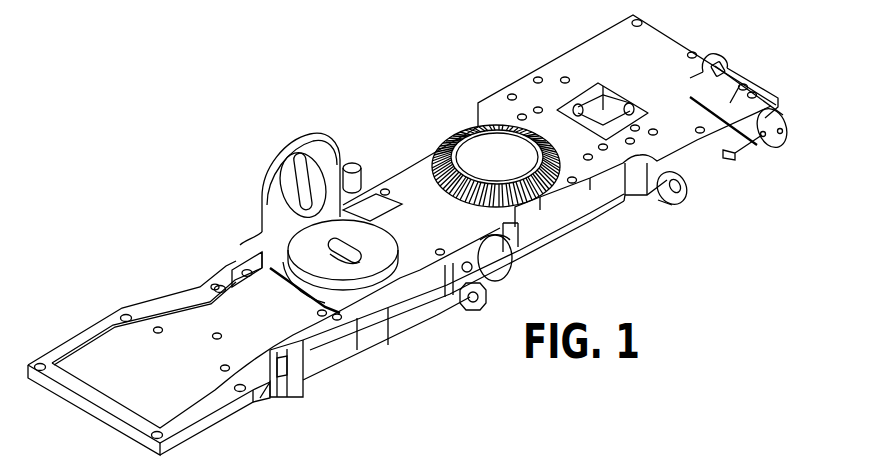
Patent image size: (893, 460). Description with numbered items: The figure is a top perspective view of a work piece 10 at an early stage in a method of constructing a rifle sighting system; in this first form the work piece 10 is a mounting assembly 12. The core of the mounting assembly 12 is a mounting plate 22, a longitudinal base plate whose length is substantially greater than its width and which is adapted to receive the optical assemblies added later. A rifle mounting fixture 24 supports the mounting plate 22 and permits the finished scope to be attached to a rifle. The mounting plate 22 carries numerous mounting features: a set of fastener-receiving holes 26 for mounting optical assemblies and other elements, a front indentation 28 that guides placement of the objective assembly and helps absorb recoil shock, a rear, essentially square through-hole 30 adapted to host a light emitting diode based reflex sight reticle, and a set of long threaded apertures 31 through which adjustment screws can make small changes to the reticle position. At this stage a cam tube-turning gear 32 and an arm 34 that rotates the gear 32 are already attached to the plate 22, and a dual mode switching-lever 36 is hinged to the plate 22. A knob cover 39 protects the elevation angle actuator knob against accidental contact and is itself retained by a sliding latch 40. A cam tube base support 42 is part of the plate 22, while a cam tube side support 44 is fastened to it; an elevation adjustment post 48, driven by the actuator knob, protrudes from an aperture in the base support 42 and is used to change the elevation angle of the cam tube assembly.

The work piece 10 is at (270, 88).
The mounting assembly 12 is at (100, 312).
The mounting plate 22 is at (705, 152).
The rifle mounting fixture 24 is at (636, 203).
The fastener-receiving holes 26 is at (220, 369).
The front indentation 28 is at (190, 398).
The rear square through-hole 30 is at (592, 92).
The long threaded apertures 31 is at (600, 106).
The cam tube-turning gear 32 is at (455, 143).
The arm 34 is at (349, 160).
The dual mode switching-lever 36 is at (757, 110).
The knob cover 39 is at (400, 322).
The sliding latch 40 is at (478, 250).
The cam tube base support 42 is at (388, 236).
The cam tube side support 44 is at (258, 210).
The elevation adjustment post 48 is at (333, 247).